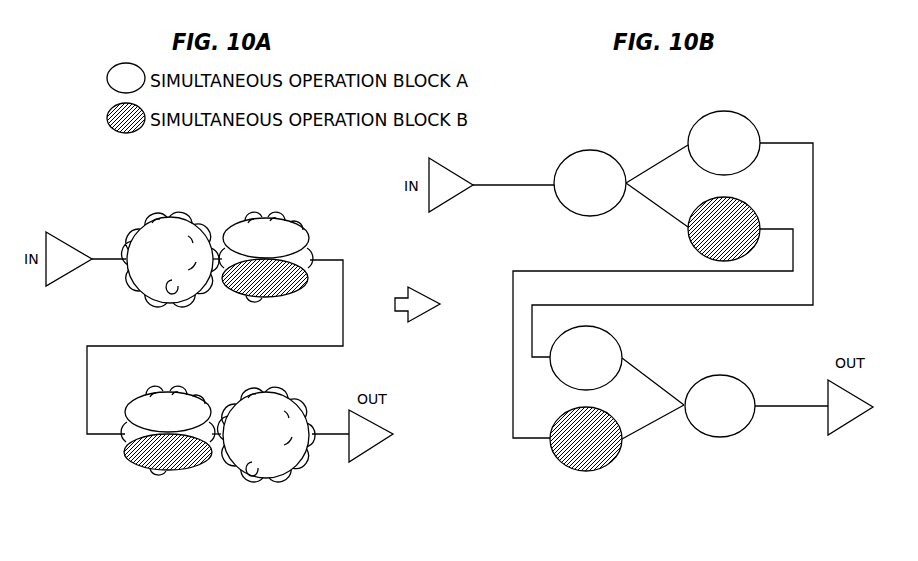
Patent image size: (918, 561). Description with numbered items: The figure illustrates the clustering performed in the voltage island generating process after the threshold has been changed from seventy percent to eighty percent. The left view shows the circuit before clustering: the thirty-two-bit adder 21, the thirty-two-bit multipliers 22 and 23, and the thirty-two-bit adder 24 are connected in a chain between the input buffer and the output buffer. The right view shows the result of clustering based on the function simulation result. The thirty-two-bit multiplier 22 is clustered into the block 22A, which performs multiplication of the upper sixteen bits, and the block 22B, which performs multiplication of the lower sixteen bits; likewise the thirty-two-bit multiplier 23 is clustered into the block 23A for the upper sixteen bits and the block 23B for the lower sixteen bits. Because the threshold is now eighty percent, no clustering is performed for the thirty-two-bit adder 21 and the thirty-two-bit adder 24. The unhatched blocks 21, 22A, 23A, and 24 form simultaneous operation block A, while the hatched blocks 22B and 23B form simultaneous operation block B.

In FIG. 10A, the 32-bit adder 21 is at (206, 216).
In FIG. 10B, the 32-bit adder 21 is at (602, 151).
In FIG. 10A, the 32-bit multiplier 22 is at (305, 216).
In FIG. 10A, the 32-bit multiplier 23 is at (135, 479).
In FIG. 10A, the 32-bit adder 24 is at (235, 479).
In FIG. 10B, the 32-bit adder 24 is at (749, 381).
In FIG. 10B, the block 22A is at (755, 128).
In FIG. 10B, the block 22B is at (755, 215).
In FIG. 10B, the block 23A is at (615, 344).
In FIG. 10B, the block 23B is at (606, 413).